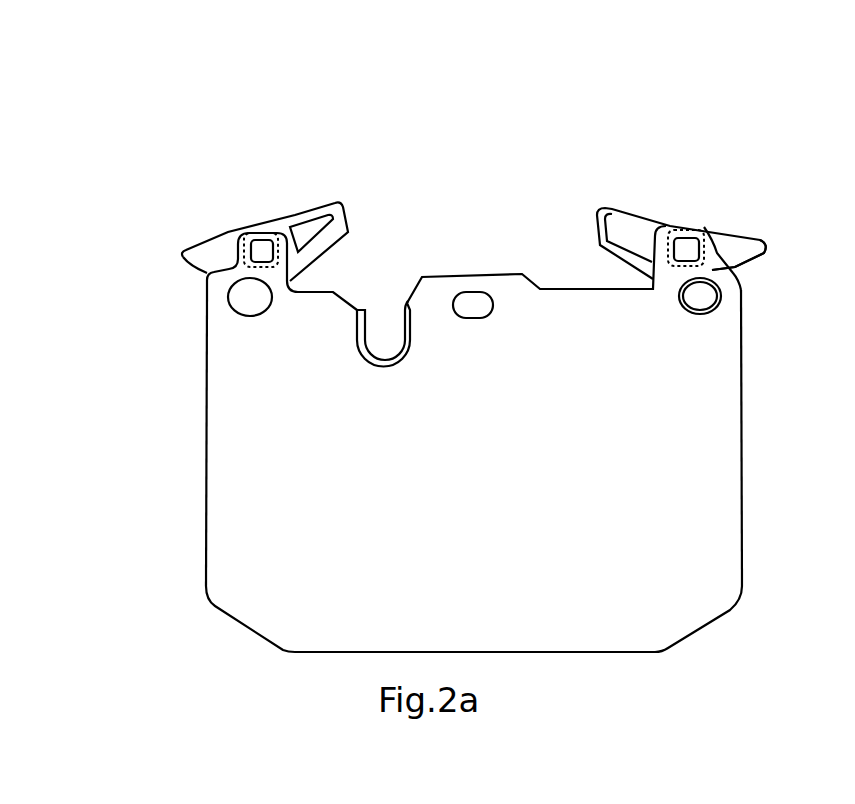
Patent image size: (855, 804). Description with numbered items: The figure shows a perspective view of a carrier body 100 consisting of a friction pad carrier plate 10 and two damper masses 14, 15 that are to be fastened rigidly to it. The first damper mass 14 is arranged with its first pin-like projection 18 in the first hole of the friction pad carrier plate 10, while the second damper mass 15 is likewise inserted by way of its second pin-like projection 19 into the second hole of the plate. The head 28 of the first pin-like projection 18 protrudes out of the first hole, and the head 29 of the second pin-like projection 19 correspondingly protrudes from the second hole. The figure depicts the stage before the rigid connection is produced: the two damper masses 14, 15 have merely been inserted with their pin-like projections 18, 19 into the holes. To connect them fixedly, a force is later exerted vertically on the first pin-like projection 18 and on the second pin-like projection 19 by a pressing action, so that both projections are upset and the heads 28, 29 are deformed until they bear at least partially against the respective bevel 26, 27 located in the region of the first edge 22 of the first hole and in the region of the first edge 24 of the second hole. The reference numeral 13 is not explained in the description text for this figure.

The carrier body 100 is at (216, 187).
The friction pad carrier plate 10 is at (285, 590).
The backing plate 13 is at (287, 558).
The first damper mass 14 is at (615, 217).
The second damper mass 15 is at (217, 253).
The first pin-like projection 18 is at (688, 237).
The second pin-like projection 19 is at (260, 237).
The first edge of the first hole 22 is at (740, 271).
The first edge of the second hole 24 is at (212, 275).
The bevel 26 is at (702, 229).
The bevel 27 is at (277, 236).
The head of the first pin-like projection 28 is at (677, 237).
The head of the second pin-like projection 29 is at (253, 240).